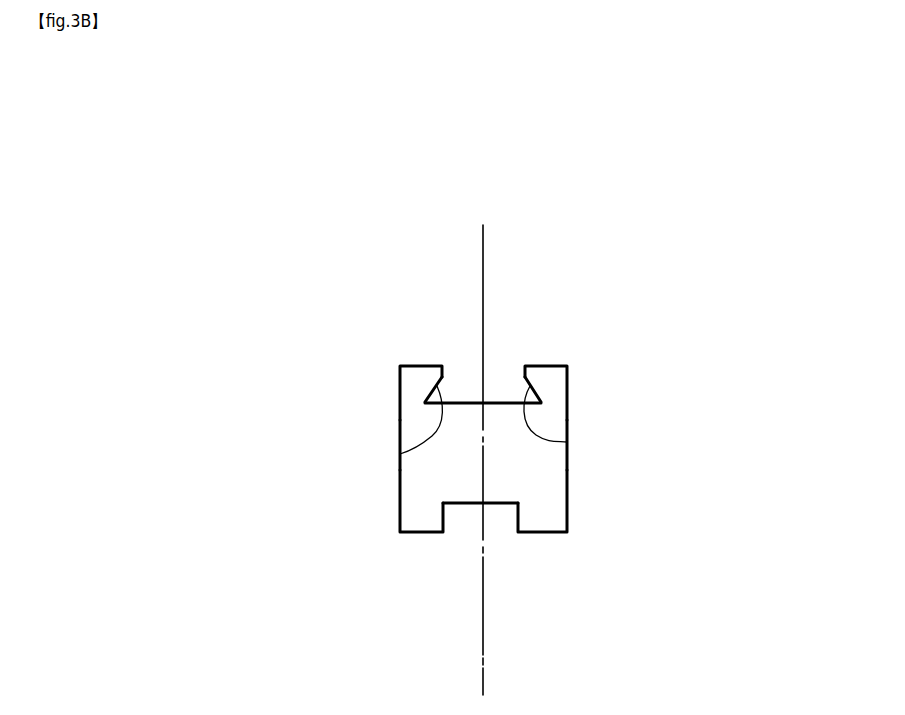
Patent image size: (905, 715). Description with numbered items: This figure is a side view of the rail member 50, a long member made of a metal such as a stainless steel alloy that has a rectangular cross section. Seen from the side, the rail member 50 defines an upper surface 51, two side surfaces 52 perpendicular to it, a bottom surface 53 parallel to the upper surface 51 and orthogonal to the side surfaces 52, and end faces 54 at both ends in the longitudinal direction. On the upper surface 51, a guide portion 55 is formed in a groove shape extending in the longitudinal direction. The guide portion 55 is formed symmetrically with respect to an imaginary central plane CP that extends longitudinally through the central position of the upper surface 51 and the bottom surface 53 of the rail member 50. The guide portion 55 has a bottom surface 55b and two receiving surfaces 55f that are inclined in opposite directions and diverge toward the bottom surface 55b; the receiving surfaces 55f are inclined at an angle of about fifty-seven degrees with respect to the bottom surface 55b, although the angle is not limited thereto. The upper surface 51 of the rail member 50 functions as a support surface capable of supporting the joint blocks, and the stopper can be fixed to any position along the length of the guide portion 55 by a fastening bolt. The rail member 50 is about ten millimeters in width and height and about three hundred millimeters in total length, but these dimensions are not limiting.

The rail member 50 is at (626, 369).
The upper surface 51 is at (413, 366).
The side surfaces 52 is at (400, 501).
The bottom surface 53 is at (462, 503).
The end faces 54 is at (534, 472).
The guide portion 55 is at (468, 397).
The bottom surface of the guide portion 55b is at (498, 400).
The receiving surfaces 55f is at (400, 454).
The central plane CP is at (483, 313).